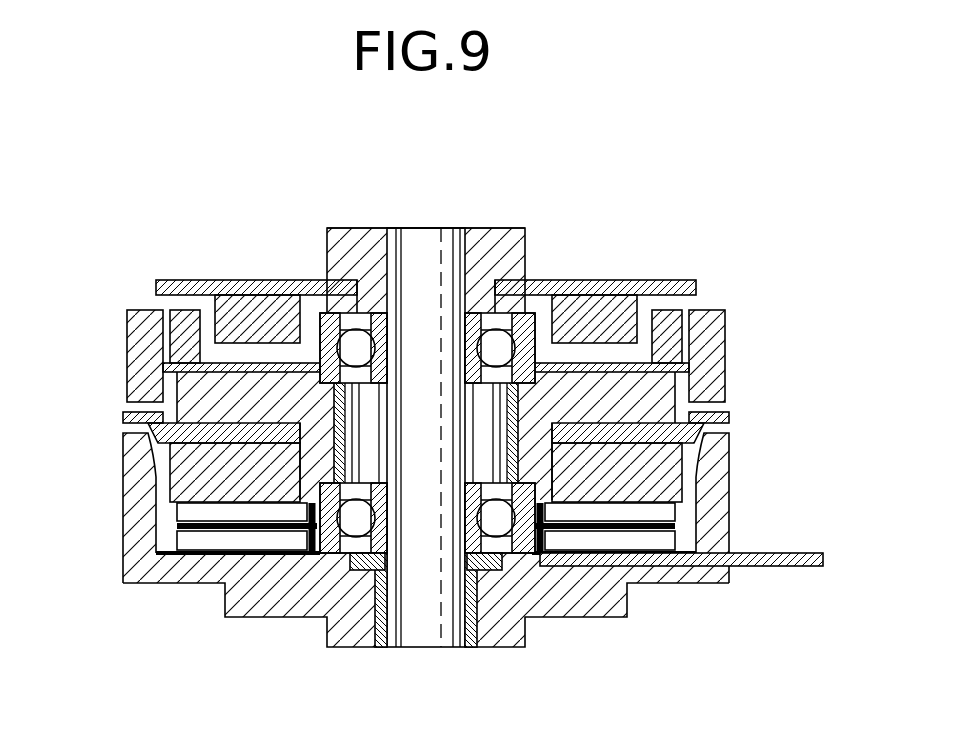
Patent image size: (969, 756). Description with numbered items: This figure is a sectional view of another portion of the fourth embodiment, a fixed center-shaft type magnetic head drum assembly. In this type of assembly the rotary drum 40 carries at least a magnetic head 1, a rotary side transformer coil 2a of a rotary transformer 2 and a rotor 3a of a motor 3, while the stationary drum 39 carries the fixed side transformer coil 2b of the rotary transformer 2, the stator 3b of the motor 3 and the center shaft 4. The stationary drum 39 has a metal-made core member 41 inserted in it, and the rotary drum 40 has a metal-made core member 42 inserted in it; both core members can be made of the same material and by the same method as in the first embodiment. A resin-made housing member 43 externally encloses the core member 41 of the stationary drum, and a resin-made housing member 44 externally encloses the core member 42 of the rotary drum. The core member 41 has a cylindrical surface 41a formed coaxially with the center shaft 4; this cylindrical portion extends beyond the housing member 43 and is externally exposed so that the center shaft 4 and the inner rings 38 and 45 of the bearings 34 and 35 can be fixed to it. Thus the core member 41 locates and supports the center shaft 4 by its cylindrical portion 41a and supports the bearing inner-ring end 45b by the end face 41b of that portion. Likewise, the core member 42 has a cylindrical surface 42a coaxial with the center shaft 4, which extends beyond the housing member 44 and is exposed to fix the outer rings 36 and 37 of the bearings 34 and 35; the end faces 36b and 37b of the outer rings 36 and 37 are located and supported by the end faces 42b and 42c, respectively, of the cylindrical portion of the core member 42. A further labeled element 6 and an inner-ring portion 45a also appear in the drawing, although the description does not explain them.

The magnetic head 1 is at (165, 465).
The rotary transformer 2 is at (690, 526).
The rotary side transformer coil 2a is at (207, 512).
The fixed side transformer coil 2b is at (265, 548).
The motor 3 is at (603, 270).
The rotor 3a is at (132, 370).
The stator 3b is at (633, 282).
The center shaft 4 is at (446, 250).
The rotor assembly 6 is at (421, 192).
The bearing 34 is at (473, 308).
The bearing 35 is at (496, 585).
The outer ring 36 is at (527, 300).
The end face of outer ring 36b is at (548, 283).
The outer ring 37 is at (527, 605).
The end face of outer ring 37b is at (565, 615).
The inner ring 38 is at (493, 338).
The stationary drum 39 is at (756, 590).
The rotary drum 40 is at (745, 352).
The core member 41 is at (470, 585).
The cylindrical surface 41a is at (457, 612).
The end face 41b is at (353, 598).
The core member 42 is at (640, 465).
The cylindrical surface 42a is at (640, 390).
The end face 42b is at (468, 388).
The end face 42c is at (330, 562).
The housing member 43 is at (627, 605).
The housing member 44 is at (127, 322).
The inner ring 45 is at (480, 562).
The sleeve flange 45a is at (457, 530).
The bearing inner-ring end 45b is at (383, 525).